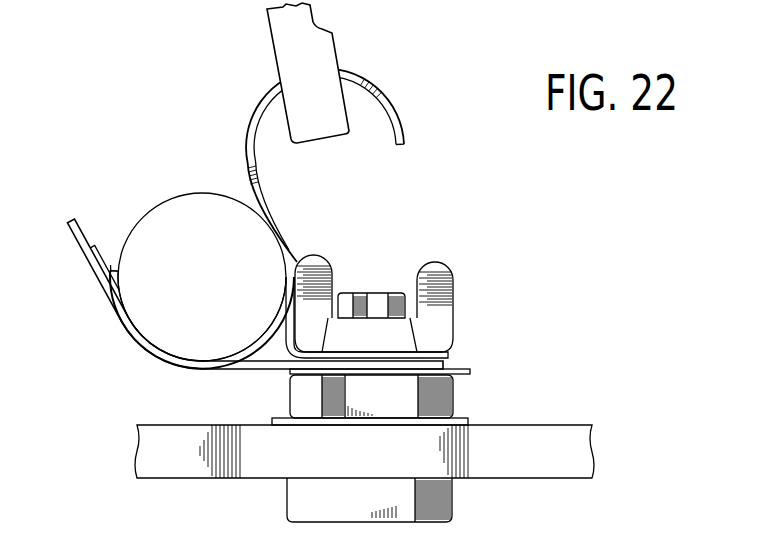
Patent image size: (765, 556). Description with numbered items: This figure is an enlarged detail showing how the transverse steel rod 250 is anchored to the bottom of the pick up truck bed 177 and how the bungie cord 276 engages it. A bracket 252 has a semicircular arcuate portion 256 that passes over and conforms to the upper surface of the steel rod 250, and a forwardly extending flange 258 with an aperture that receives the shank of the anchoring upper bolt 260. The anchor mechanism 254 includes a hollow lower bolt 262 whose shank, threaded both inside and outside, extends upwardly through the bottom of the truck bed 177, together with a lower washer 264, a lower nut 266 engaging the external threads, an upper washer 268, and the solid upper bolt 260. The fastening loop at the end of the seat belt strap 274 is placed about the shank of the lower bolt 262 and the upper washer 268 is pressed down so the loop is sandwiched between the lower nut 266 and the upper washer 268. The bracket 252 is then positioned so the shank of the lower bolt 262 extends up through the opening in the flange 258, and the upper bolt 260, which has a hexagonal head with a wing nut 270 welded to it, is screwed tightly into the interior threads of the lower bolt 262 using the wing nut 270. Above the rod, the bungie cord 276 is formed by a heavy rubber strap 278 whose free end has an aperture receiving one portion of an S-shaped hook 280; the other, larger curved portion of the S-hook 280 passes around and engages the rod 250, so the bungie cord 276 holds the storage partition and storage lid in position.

The pick up truck bed 177 is at (183, 480).
The transverse steel rod 250 is at (170, 192).
The bracket 252 is at (188, 179).
The anchor mechanism 254 is at (426, 287).
The semicircular arcuate portion 256 is at (128, 221).
The forwardly extending flange 258 is at (446, 352).
The upper bolt 260 is at (368, 292).
The lower bolt 262 is at (455, 495).
The lower washer 264 is at (468, 420).
The lower nut 266 is at (465, 390).
The upper washer 268 is at (450, 366).
The wing nut 270 is at (457, 270).
The seat belt strap 274 is at (68, 236).
The bungie cord 276 is at (326, 131).
The heavy rubber strap 278 is at (333, 37).
The S-shaped hook 280 is at (398, 100).